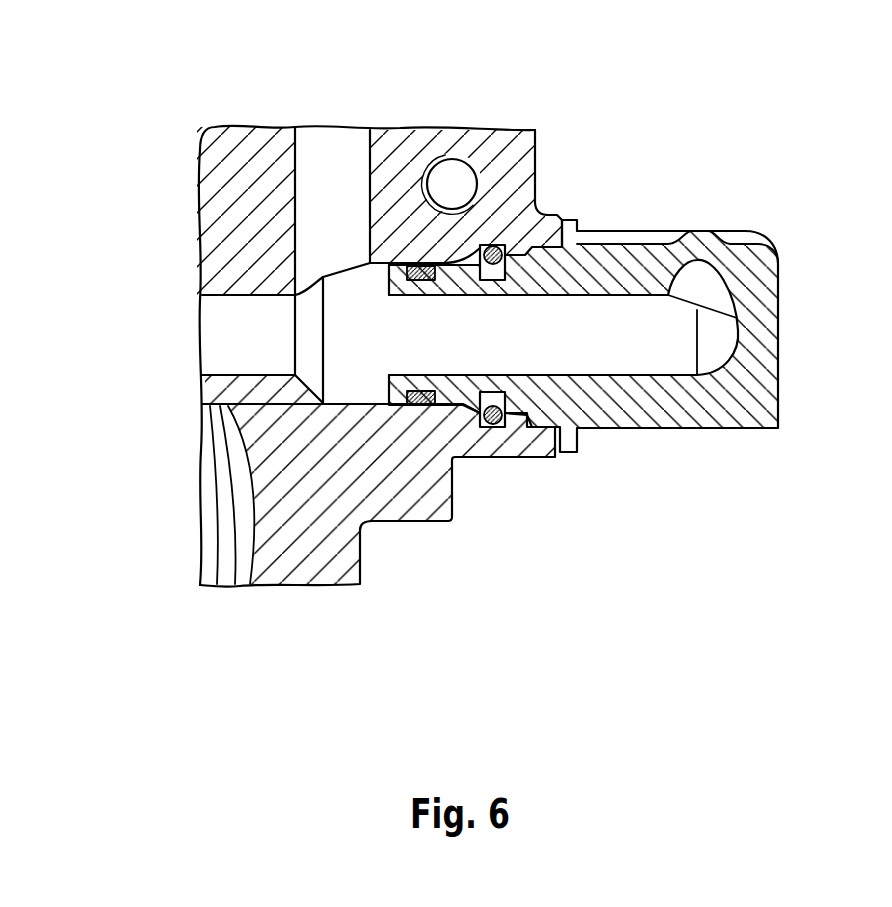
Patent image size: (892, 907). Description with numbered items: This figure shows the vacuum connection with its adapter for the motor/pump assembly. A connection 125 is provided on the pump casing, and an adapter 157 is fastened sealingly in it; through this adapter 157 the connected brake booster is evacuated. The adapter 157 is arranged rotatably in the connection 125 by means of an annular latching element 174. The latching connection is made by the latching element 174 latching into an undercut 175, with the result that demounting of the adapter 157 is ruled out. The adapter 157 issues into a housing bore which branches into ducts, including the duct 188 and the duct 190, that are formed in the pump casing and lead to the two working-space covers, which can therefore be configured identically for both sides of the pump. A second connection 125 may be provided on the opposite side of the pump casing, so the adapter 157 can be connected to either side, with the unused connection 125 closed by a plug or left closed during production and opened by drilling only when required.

The duct 188 is at (336, 160).
The annular latching element 174 is at (538, 210).
The undercut 175 is at (498, 427).
The duct 190 is at (232, 337).
The adapter 157 is at (683, 403).
The connection 125 is at (537, 443).